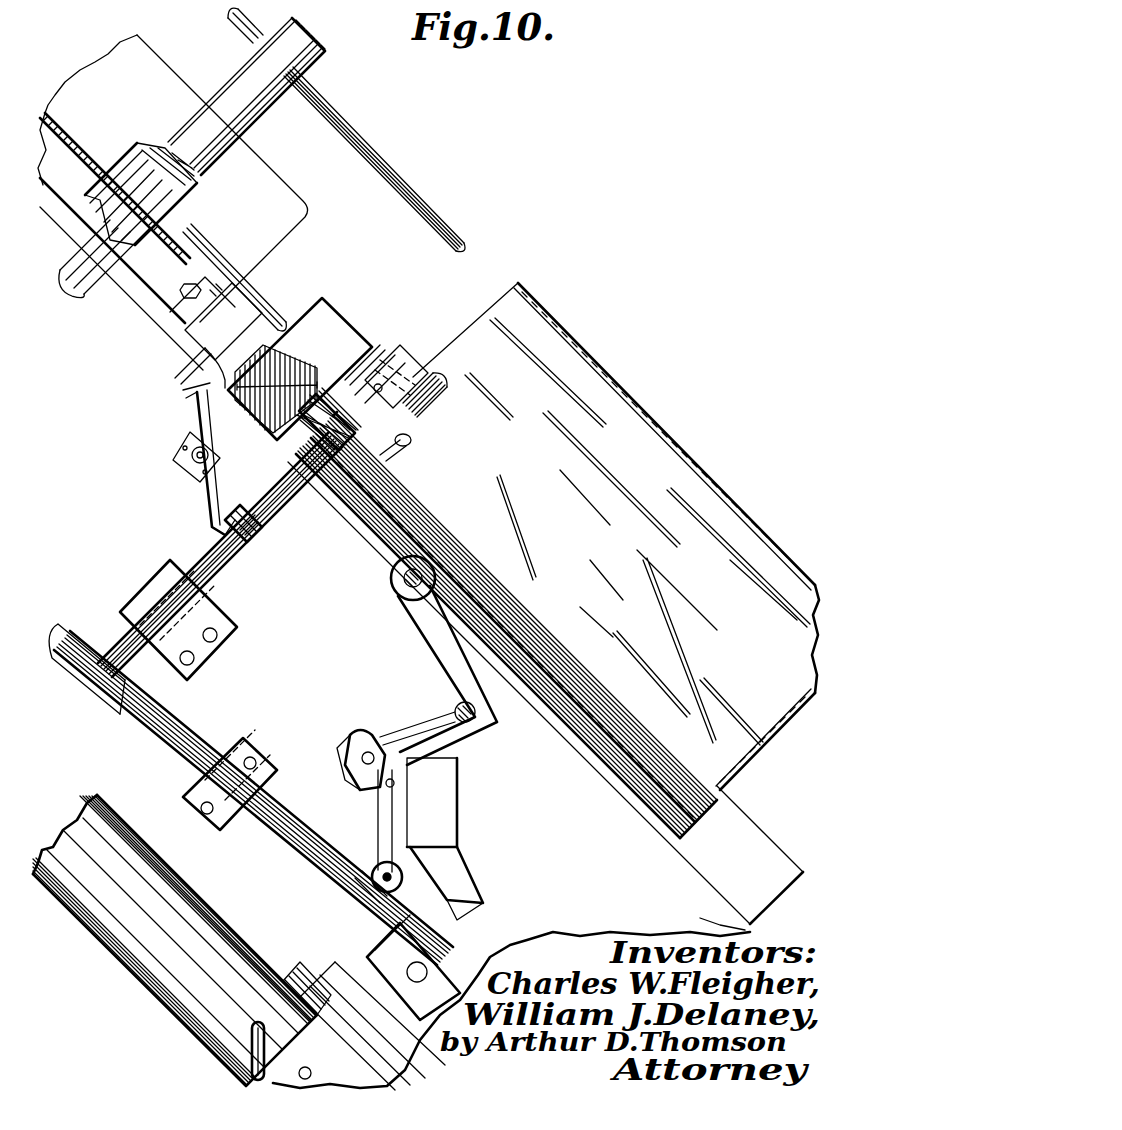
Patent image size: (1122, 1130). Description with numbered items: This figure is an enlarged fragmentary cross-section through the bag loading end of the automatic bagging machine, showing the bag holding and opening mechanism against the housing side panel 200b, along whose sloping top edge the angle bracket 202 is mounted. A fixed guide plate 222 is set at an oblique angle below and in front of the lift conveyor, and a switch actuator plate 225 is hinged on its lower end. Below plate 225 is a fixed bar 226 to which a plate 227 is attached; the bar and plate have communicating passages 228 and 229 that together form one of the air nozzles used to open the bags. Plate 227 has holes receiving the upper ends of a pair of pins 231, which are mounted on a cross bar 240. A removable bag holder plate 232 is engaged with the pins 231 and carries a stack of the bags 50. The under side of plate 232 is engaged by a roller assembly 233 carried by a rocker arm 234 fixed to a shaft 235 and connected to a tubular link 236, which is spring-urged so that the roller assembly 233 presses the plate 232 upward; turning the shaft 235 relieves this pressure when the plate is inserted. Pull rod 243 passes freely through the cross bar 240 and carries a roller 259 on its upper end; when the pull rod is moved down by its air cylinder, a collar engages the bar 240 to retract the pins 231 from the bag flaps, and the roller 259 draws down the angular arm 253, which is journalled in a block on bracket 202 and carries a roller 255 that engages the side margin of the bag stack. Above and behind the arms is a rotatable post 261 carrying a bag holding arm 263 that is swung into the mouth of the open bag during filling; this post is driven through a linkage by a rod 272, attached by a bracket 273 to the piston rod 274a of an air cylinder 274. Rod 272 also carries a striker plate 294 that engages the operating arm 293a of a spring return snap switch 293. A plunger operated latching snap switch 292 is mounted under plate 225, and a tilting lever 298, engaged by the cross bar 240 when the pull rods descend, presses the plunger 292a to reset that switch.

The bags 50 is at (708, 500).
The angle bracket 202 is at (768, 815).
The side panel 200b is at (752, 927).
The fixed guide plate 222 is at (92, 152).
The switch actuator plate 225 is at (262, 300).
The fixed bar 226 is at (282, 370).
The plate 227 is at (365, 360).
The passage 228 is at (270, 410).
The passage 229 is at (395, 372).
The pins 231 is at (297, 473).
The removable bag holder plate 232 is at (620, 753).
The roller assembly 233 is at (400, 584).
The rocker arm 234 is at (453, 737).
The shaft 235 is at (457, 708).
The tubular link 236 is at (453, 882).
The cross bar 240 is at (250, 550).
The pull rod 243 is at (222, 578).
The angular arm 253 is at (411, 443).
The roller 255 is at (393, 452).
The roller 259 is at (437, 392).
The rotatable post 261 is at (287, 48).
The bag holding arm 263 is at (427, 208).
The rod 272 is at (280, 820).
The bracket 273 is at (380, 1050).
The air cylinder 274 is at (200, 917).
The piston rod 274a is at (310, 1027).
The plunger operated latching snap switch 292 is at (220, 350).
The plunger 292a is at (193, 385).
The spring return snap switch 293 is at (443, 787).
The operating arm 293a is at (385, 812).
The striker plate 294 is at (357, 870).
The tilting lever 298 is at (210, 493).